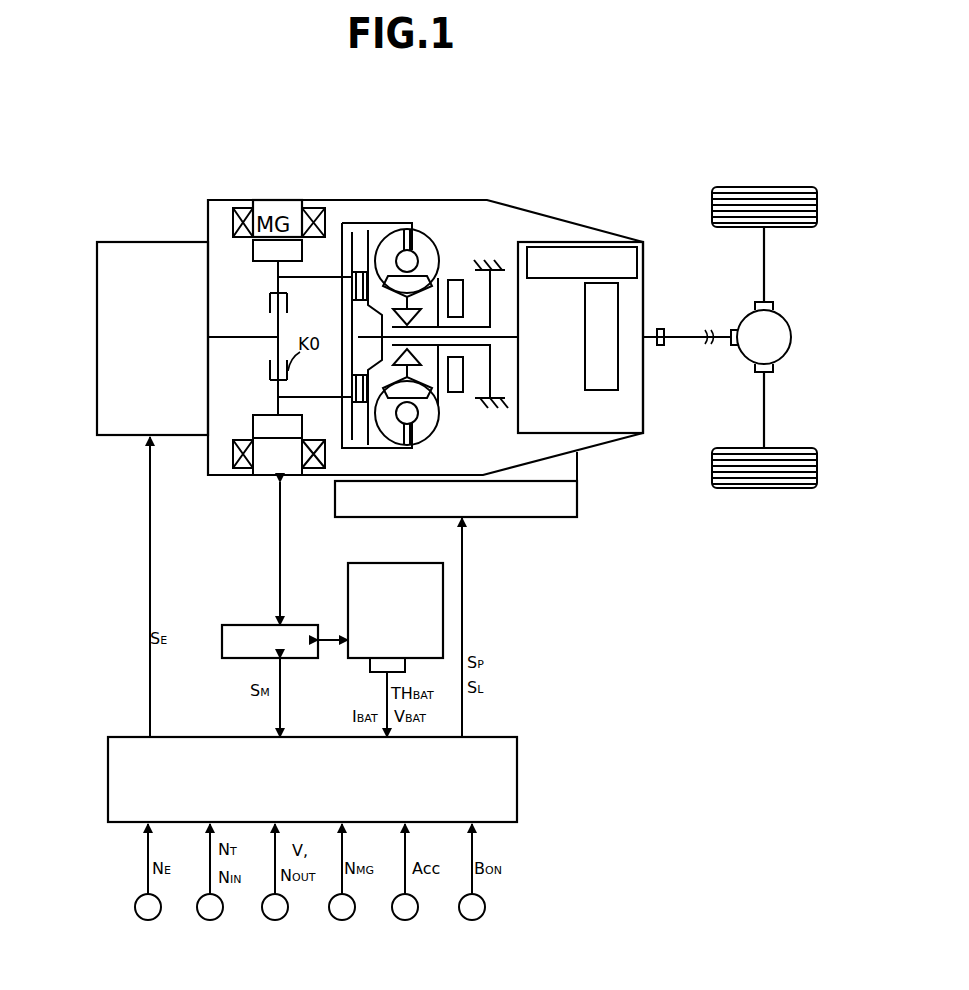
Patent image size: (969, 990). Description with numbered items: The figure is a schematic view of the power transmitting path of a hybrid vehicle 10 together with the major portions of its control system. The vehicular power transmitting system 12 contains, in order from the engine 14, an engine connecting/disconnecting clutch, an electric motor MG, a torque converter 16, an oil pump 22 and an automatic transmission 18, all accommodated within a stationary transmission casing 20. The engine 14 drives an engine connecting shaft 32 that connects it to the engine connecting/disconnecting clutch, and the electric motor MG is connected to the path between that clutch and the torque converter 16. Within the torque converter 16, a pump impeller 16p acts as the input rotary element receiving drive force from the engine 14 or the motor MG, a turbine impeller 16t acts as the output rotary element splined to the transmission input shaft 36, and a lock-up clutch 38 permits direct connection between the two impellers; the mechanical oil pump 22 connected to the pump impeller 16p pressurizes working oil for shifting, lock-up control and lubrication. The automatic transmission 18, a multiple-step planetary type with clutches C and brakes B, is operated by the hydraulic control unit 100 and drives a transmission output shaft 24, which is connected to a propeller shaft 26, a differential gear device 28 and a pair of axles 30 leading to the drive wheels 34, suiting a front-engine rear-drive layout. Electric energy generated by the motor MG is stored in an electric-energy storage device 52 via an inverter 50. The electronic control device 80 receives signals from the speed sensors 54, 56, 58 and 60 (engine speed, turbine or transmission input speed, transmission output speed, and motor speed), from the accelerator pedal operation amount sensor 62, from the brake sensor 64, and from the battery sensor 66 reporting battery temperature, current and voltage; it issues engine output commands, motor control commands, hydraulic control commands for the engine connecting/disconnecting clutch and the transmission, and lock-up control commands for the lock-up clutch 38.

The hybrid vehicle 10 is at (591, 110).
The vehicular power transmitting system 12 is at (415, 155).
The engine 14 is at (119, 246).
The torque converter 16 is at (433, 341).
The pump impeller 16p is at (426, 424).
The turbine impeller 16t is at (387, 425).
The automatic transmission 18 is at (630, 288).
The transmission casing 20 is at (437, 198).
The oil pump 22 is at (457, 392).
The transmission output shaft 24 is at (660, 329).
The propeller shaft 26 is at (690, 345).
The differential gear device 28 is at (776, 324).
The axles 30 is at (764, 265).
The engine connecting shaft 32 is at (243, 336).
The drive wheels 34 is at (715, 211).
The transmission input shaft 36 is at (507, 340).
The lock-up clutch 38 is at (368, 229).
The inverter 50 is at (226, 652).
The electric-energy storage device 52 is at (358, 565).
The speed sensor 54 is at (148, 920).
The speed sensor 56 is at (210, 920).
The speed sensor 58 is at (275, 920).
The speed sensor 60 is at (342, 920).
The accelerator pedal operation amount sensor 62 is at (405, 920).
The brake sensor 64 is at (472, 920).
The battery sensor 66 is at (370, 667).
The electronic control device 80 is at (505, 737).
The hydraulic control unit 100 is at (580, 483).